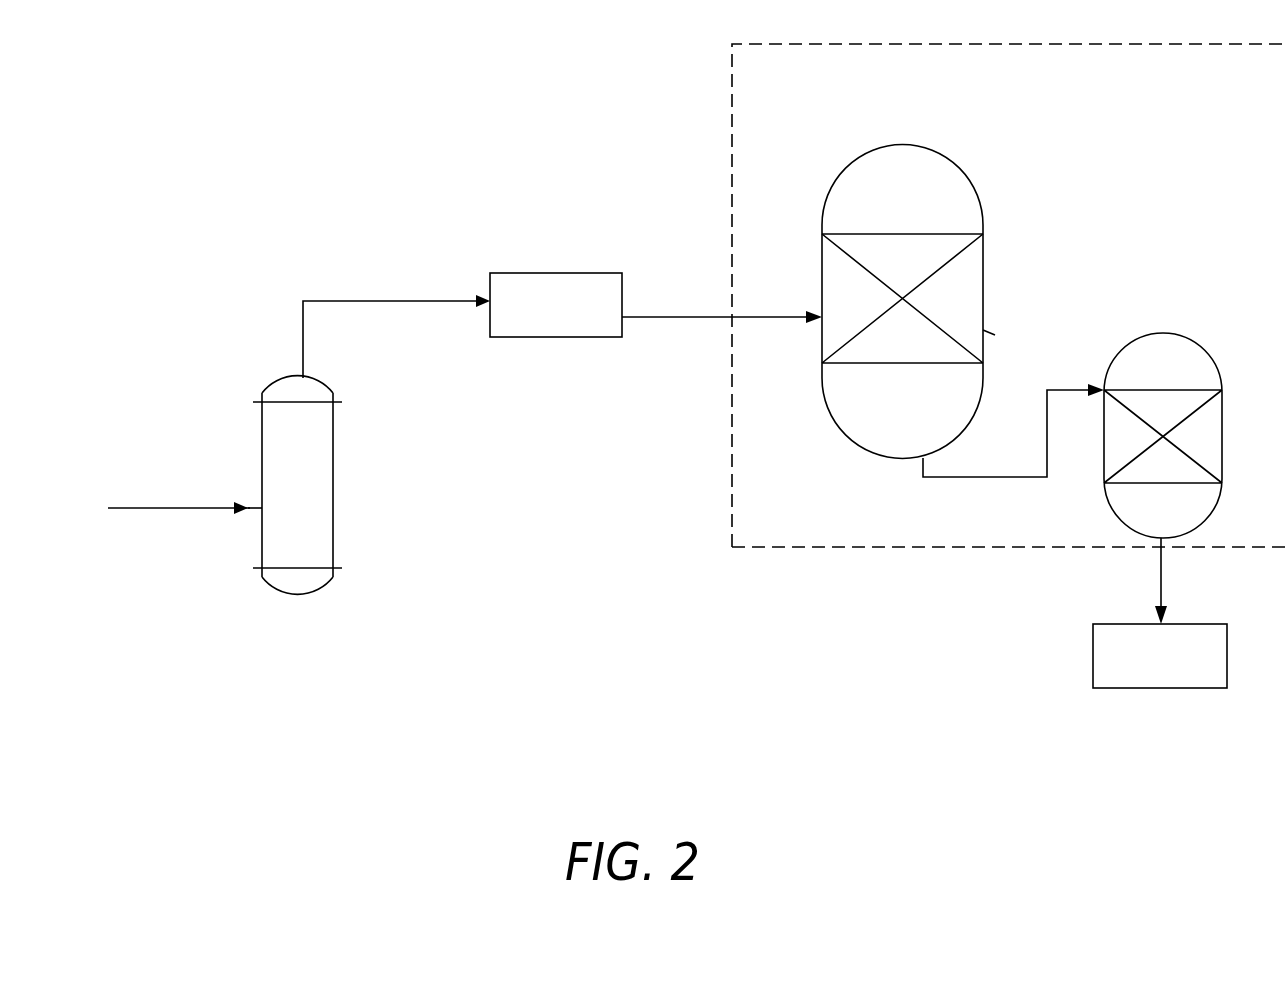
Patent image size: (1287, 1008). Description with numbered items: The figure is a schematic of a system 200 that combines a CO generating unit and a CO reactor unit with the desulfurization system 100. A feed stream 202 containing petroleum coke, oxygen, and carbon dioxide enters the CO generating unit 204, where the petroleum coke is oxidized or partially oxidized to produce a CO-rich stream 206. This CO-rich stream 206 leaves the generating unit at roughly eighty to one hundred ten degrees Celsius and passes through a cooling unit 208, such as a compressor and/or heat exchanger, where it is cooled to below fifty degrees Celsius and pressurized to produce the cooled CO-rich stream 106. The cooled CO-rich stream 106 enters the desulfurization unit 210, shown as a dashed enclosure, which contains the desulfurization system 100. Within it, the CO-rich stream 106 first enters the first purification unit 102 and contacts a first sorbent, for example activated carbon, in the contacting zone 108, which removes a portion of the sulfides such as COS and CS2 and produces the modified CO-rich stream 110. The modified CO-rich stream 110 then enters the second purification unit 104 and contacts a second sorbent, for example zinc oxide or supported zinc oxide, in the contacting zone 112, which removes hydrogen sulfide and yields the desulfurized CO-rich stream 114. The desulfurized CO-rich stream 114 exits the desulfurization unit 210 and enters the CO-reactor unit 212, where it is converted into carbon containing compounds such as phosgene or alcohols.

The system 200 is at (182, 108).
The feed stream 202 is at (172, 508).
The CO generating unit 204 is at (262, 437).
The CO-rich stream 206 is at (328, 301).
The cooling unit 208 is at (500, 273).
The desulfurization unit 210 is at (731, 137).
The CO-reactor unit 212 is at (1160, 656).
The desulfurization system 100 is at (870, 284).
The first purification unit 102 is at (838, 222).
The second purification unit 104 is at (1136, 413).
The CO-rich stream 106 is at (672, 317).
The contacting zone 108 is at (836, 298).
The modified CO-rich stream 110 is at (980, 477).
The contacting zone 112 is at (1126, 455).
The desulfurized CO-rich stream 114 is at (1160, 588).